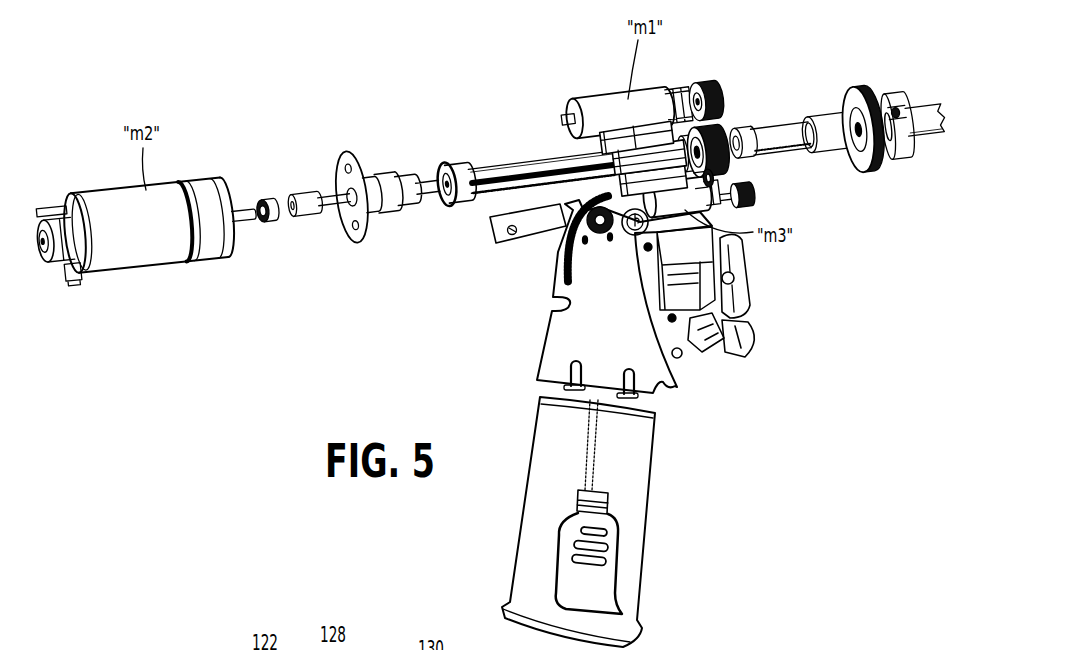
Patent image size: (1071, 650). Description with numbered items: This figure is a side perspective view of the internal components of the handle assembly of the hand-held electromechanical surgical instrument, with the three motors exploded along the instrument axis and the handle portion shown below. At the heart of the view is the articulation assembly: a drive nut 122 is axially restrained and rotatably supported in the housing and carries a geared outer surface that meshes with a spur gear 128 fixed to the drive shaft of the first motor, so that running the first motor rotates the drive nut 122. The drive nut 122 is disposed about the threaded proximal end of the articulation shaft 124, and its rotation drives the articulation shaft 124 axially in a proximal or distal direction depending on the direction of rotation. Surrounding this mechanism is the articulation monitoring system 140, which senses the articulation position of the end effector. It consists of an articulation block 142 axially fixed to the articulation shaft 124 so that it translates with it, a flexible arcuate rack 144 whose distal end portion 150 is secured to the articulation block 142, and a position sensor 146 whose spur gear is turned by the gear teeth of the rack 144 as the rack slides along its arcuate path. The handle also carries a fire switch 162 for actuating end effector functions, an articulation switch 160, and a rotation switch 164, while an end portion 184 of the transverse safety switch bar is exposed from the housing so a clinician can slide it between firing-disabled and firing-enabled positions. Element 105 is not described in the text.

The mounting flange 105 is at (430, 181).
The drive nut 122 is at (734, 106).
The articulation shaft 124 is at (489, 156).
The spur gear 128 is at (709, 79).
The articulation monitoring system 140 is at (535, 205).
The articulation block 142 is at (628, 134).
The rack 144 is at (572, 263).
The position sensor 146 is at (573, 229).
The distal end portion 150 is at (725, 181).
The articulation switch 160 is at (753, 328).
The fire switch 162 is at (745, 278).
The rotation switch 164 is at (750, 312).
The end portion 184 is at (670, 350).